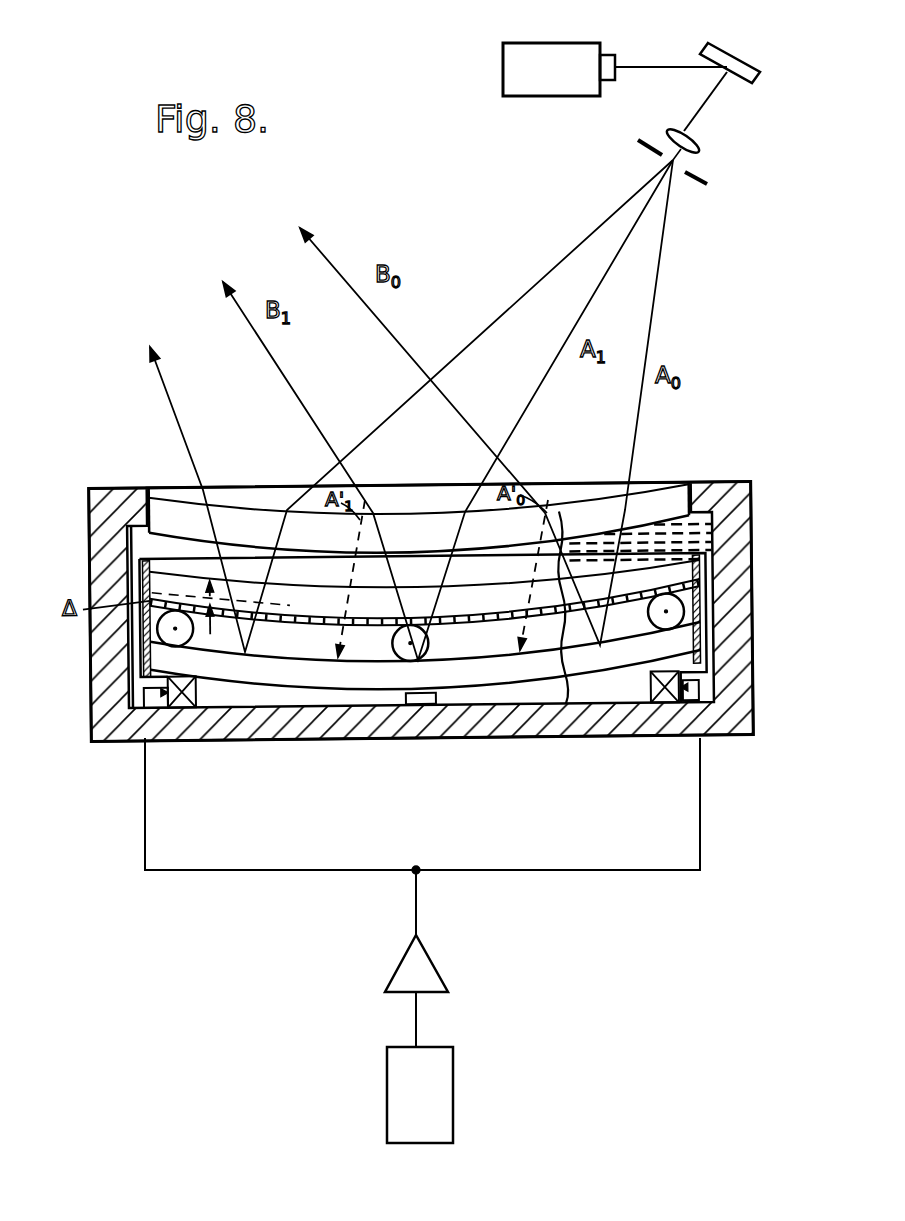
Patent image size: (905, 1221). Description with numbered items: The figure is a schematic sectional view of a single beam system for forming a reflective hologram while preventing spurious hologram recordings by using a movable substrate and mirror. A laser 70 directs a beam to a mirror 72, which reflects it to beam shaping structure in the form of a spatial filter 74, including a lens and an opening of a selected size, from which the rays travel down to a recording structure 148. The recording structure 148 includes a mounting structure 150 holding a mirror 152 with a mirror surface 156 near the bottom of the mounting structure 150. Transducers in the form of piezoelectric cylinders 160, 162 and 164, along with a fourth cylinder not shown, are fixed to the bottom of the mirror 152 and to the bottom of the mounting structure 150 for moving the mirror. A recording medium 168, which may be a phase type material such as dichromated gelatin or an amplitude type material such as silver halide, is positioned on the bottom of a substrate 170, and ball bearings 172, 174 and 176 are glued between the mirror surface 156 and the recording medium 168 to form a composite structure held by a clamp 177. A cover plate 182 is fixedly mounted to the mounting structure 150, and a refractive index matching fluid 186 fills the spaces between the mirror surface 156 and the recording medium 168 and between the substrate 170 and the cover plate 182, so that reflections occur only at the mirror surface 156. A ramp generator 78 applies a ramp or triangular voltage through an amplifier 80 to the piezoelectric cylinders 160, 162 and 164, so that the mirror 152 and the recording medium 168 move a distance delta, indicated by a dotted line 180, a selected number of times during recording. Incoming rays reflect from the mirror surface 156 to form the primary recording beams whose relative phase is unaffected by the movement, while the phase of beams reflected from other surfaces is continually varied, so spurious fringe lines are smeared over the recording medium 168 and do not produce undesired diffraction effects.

The mirror 72 is at (504, 43).
The laser 70 is at (712, 46).
The spatial filter 74 is at (708, 183).
The ramp generator 78 is at (453, 1143).
The amplifier 80 is at (448, 992).
The recording structure 148 is at (742, 700).
The mounting structure 150 is at (752, 660).
The mirror 152 is at (468, 686).
The mirror surface 156 is at (322, 658).
The piezoelectric cylinder 160 is at (197, 708).
The piezoelectric cylinder 162 is at (433, 694).
The piezoelectric cylinder 164 is at (663, 706).
The recording medium 168 is at (303, 607).
The substrate 170 is at (325, 614).
The ball bearing 172 is at (158, 632).
The ball bearing 174 is at (428, 648).
The ball bearing 176 is at (700, 608).
The clamp 177 is at (140, 694).
The dotted line 180 is at (160, 578).
The cover plate 182 is at (667, 486).
The refractive index matching fluid 186 is at (545, 643).